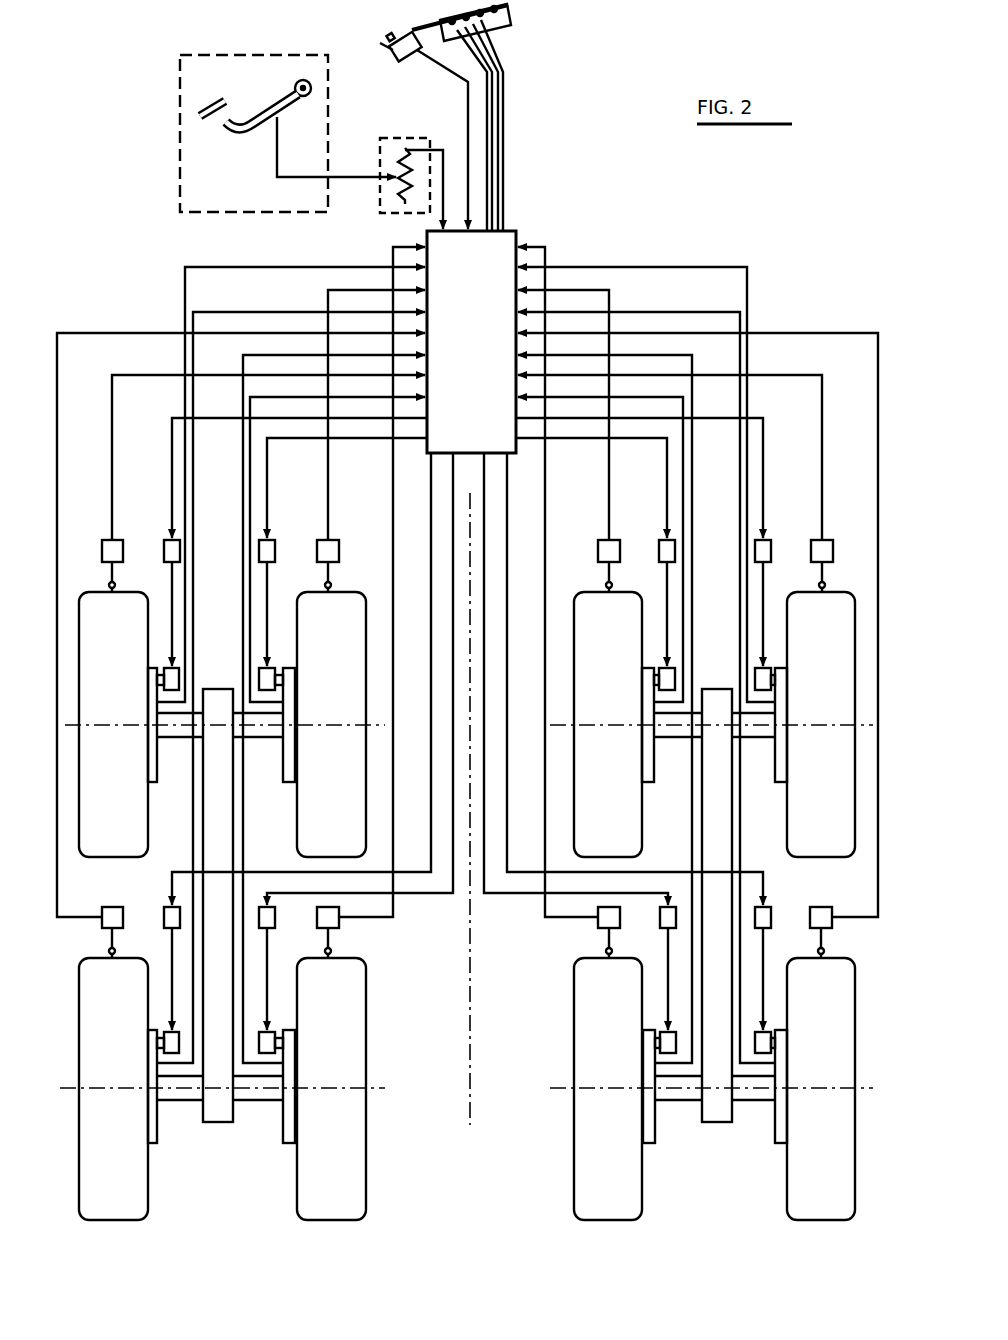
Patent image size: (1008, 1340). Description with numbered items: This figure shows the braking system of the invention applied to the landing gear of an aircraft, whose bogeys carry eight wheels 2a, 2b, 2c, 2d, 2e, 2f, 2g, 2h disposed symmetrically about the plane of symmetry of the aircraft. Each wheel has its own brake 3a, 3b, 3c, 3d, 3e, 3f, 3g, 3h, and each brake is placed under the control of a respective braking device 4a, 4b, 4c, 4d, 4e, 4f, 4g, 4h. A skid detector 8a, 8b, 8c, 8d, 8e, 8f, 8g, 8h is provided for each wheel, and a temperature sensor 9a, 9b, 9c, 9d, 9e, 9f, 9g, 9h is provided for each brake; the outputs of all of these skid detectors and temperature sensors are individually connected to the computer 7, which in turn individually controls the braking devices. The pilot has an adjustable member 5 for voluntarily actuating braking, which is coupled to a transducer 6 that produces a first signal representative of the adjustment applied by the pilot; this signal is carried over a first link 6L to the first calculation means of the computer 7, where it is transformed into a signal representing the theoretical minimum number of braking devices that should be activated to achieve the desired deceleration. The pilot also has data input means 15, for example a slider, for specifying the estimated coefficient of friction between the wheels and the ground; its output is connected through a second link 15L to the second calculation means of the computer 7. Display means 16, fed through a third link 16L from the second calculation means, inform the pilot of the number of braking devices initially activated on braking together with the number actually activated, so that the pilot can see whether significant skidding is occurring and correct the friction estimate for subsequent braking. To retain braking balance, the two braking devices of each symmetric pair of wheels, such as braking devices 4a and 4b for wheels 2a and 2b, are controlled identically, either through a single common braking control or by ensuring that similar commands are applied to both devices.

The wheel 2a is at (133, 613).
The wheel 2b is at (845, 618).
The wheel 2c is at (352, 613).
The wheel 2d is at (590, 612).
The wheel 2e is at (133, 1205).
The wheel 2f is at (797, 1188).
The wheel 2g is at (350, 1203).
The wheel 2h is at (585, 1185).
The brake 3a is at (150, 755).
The brake 3b is at (782, 766).
The brake 3c is at (290, 765).
The brake 3d is at (648, 755).
The brake 3e is at (152, 1122).
The brake 3f is at (780, 1125).
The brake 3g is at (288, 1130).
The brake 3h is at (652, 1125).
The braking device 4a is at (166, 545).
The braking device 4b is at (770, 545).
The braking device 4c is at (276, 545).
The braking device 4d is at (661, 545).
The braking device 4e is at (165, 912).
The braking device 4f is at (772, 912).
The braking device 4g is at (276, 920).
The braking device 4h is at (662, 920).
The adjustable member 5 is at (218, 128).
The transducer 6 is at (383, 138).
The first link 6L is at (446, 160).
The computer 7 is at (481, 341).
The skid detector 8a is at (104, 545).
The skid detector 8b is at (830, 548).
The skid detector 8c is at (338, 545).
The skid detector 8d is at (600, 548).
The skid detector 8e is at (104, 910).
The skid detector 8f is at (829, 912).
The skid detector 8g is at (340, 920).
The skid detector 8h is at (598, 925).
The temperature sensor 9a is at (186, 578).
The temperature sensor 9b is at (746, 603).
The temperature sensor 9c is at (249, 630).
The temperature sensor 9d is at (684, 655).
The temperature sensor 9e is at (192, 840).
The temperature sensor 9f is at (741, 842).
The temperature sensor 9g is at (244, 855).
The temperature sensor 9h is at (690, 840).
The data input means 15 is at (394, 46).
The second link 15L is at (467, 97).
The display means 16 is at (509, 18).
The third link 16L is at (505, 132).